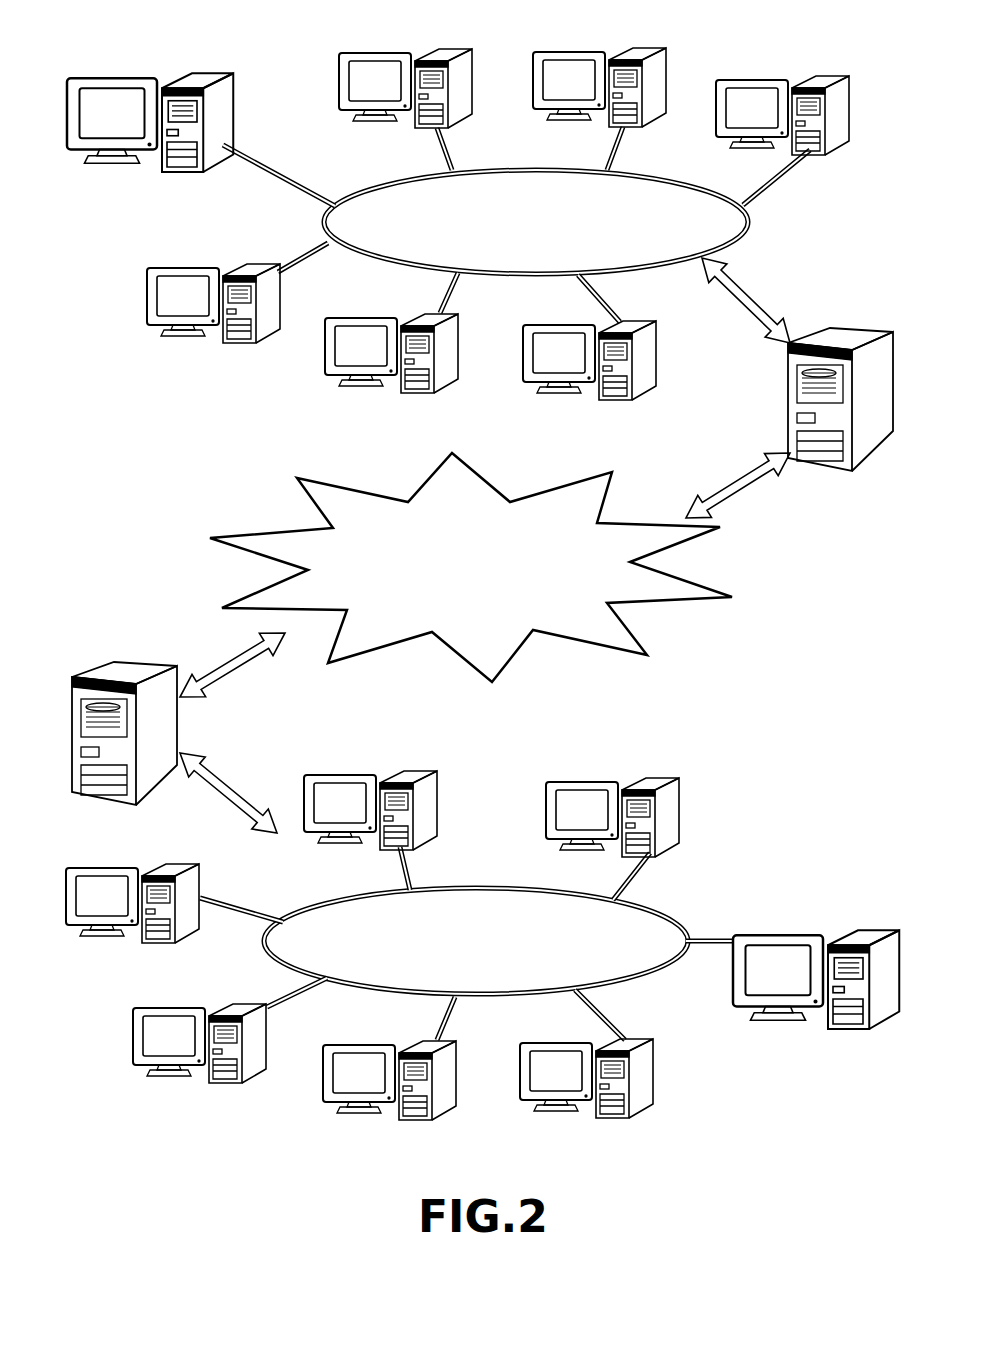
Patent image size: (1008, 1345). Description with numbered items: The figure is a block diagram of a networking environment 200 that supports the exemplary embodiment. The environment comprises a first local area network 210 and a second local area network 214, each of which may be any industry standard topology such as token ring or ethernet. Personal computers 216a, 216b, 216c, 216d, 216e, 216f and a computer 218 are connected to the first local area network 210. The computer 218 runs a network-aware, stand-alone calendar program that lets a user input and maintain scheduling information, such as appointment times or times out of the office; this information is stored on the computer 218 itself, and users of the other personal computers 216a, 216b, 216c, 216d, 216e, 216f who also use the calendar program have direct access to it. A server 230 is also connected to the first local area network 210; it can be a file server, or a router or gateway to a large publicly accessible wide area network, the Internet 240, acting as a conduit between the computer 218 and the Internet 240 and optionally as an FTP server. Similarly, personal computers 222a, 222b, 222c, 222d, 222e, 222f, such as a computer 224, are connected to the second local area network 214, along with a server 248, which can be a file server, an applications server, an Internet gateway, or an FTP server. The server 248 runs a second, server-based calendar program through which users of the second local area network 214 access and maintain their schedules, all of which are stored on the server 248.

The networking environment 200 is at (768, 640).
The first local area network 210 is at (524, 172).
The second local area network 214 is at (490, 892).
The personal computer 216a is at (452, 52).
The personal computer 216b is at (646, 50).
The personal computer 216c is at (828, 78).
The personal computer 216d is at (636, 322).
The personal computer 216e is at (356, 315).
The personal computer 216f is at (178, 266).
The computer 218 is at (205, 74).
The personal computer 222a is at (658, 778).
The personal computer 222b is at (422, 770).
The personal computer 222c is at (180, 864).
The personal computer 222d is at (166, 1004).
The personal computer 222e is at (356, 1042).
The personal computer 222f is at (634, 1040).
The computer 224 is at (823, 932).
The server 230 is at (830, 330).
The Internet 240 is at (466, 458).
The server 248 is at (140, 662).